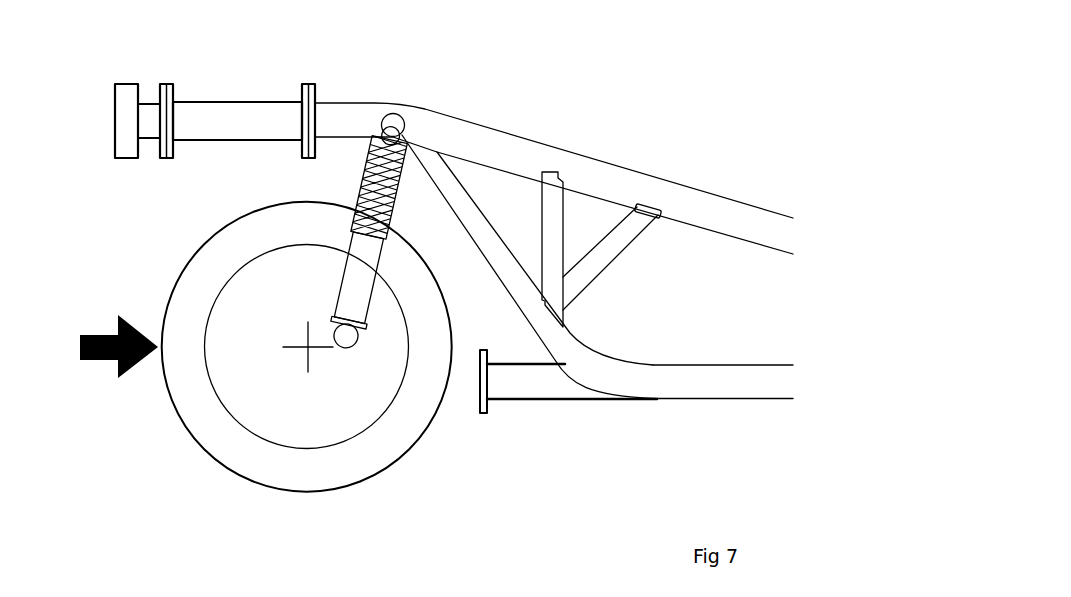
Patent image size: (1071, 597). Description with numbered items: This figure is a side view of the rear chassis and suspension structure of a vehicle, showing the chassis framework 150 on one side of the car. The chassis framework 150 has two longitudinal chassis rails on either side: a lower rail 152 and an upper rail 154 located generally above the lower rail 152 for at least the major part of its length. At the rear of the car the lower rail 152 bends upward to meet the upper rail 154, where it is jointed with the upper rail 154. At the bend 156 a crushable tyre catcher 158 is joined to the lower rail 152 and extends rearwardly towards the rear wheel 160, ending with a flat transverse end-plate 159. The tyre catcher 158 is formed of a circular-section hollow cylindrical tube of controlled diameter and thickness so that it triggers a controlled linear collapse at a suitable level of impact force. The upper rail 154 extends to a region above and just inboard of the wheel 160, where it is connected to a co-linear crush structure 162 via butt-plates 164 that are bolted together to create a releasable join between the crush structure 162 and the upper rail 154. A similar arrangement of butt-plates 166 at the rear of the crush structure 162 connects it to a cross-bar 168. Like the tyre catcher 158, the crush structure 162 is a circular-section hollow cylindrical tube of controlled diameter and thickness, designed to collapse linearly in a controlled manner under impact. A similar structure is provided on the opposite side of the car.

The chassis framework 150 is at (562, 297).
The lower rail 152 is at (730, 387).
The upper rail 154 is at (713, 193).
The bend 156 is at (633, 382).
The crushable tyre catcher 158 is at (553, 385).
The flat transverse end-plate 159 is at (480, 398).
The rear wheel 160 is at (225, 468).
The crush structure 162 is at (228, 102).
The butt-plates 164 is at (315, 102).
The butt-plates 166 is at (172, 92).
The cross-bar 168 is at (115, 118).